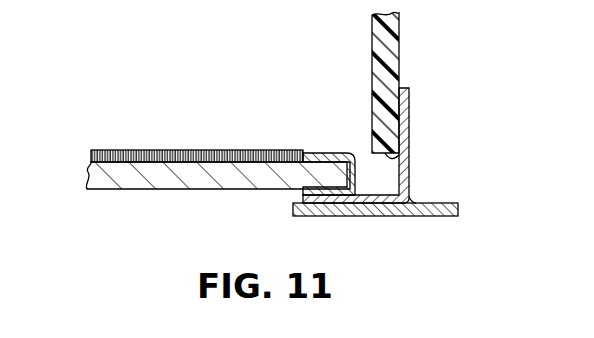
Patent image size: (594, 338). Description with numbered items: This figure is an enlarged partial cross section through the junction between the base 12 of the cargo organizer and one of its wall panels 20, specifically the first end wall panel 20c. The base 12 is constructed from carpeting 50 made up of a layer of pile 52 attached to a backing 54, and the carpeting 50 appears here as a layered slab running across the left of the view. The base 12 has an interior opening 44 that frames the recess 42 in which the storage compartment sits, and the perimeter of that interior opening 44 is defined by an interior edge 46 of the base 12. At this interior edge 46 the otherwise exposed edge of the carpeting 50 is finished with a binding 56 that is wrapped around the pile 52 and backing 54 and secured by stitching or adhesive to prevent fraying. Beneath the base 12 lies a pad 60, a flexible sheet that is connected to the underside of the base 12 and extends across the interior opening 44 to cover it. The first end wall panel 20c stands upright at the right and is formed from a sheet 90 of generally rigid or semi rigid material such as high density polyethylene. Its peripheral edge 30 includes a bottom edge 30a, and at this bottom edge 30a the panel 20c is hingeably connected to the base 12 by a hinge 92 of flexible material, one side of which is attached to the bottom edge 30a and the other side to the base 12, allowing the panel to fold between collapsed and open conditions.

The base 12 is at (157, 193).
The carpeting 50 is at (193, 132).
The pile 52 is at (170, 156).
The backing 54 is at (197, 136).
The binding 56 is at (330, 152).
The wall panel 20 is at (437, 85).
The first end wall panel 20c is at (416, 85).
The sheet 90 is at (400, 63).
The peripheral edge 30 is at (409, 169).
The bottom edge 30a is at (408, 169).
The interior opening 44 is at (408, 169).
The recess 42 is at (356, 169).
The interior edge 46 is at (360, 199).
The hinge 92 is at (413, 204).
The pad 60 is at (455, 217).